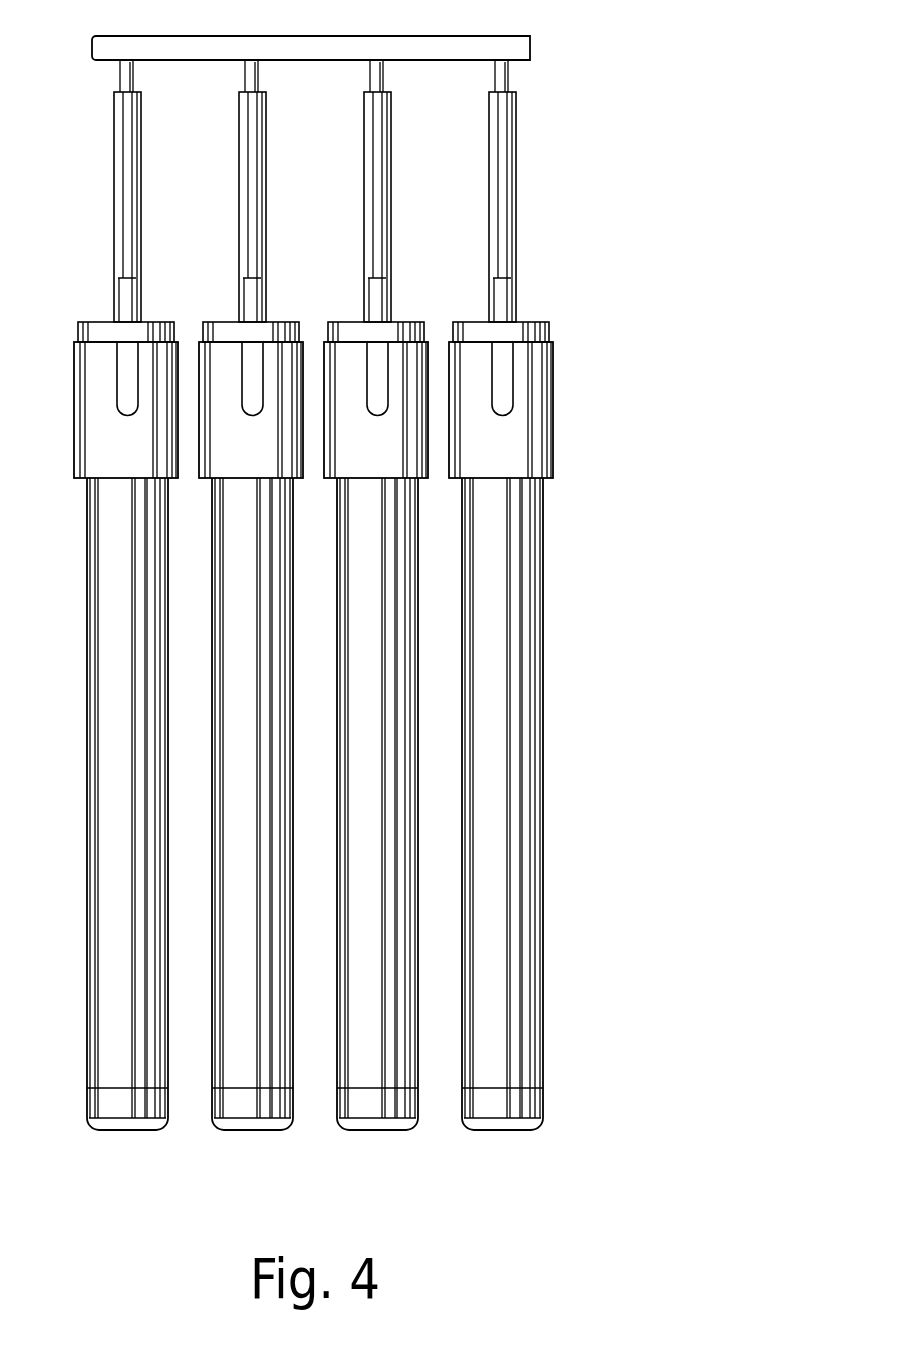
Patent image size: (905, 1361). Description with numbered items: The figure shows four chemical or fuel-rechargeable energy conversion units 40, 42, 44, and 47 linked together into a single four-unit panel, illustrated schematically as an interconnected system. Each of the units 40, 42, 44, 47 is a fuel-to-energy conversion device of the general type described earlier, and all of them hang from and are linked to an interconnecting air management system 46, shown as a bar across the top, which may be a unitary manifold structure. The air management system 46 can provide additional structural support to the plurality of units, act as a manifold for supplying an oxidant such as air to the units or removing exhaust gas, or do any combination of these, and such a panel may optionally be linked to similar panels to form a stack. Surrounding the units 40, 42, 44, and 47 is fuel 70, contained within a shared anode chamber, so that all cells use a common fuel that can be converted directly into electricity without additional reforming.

The interconnecting air management system 46 is at (531, 47).
The chemical or fuel-rechargeable energy conversion unit 40 is at (127, 1130).
The chemical or fuel-rechargeable energy conversion unit 42 is at (252, 1130).
The chemical or fuel-rechargeable energy conversion unit 44 is at (378, 1130).
The chemical or fuel-rechargeable energy conversion unit 47 is at (502, 1130).
The fuel 70 is at (80, 702).